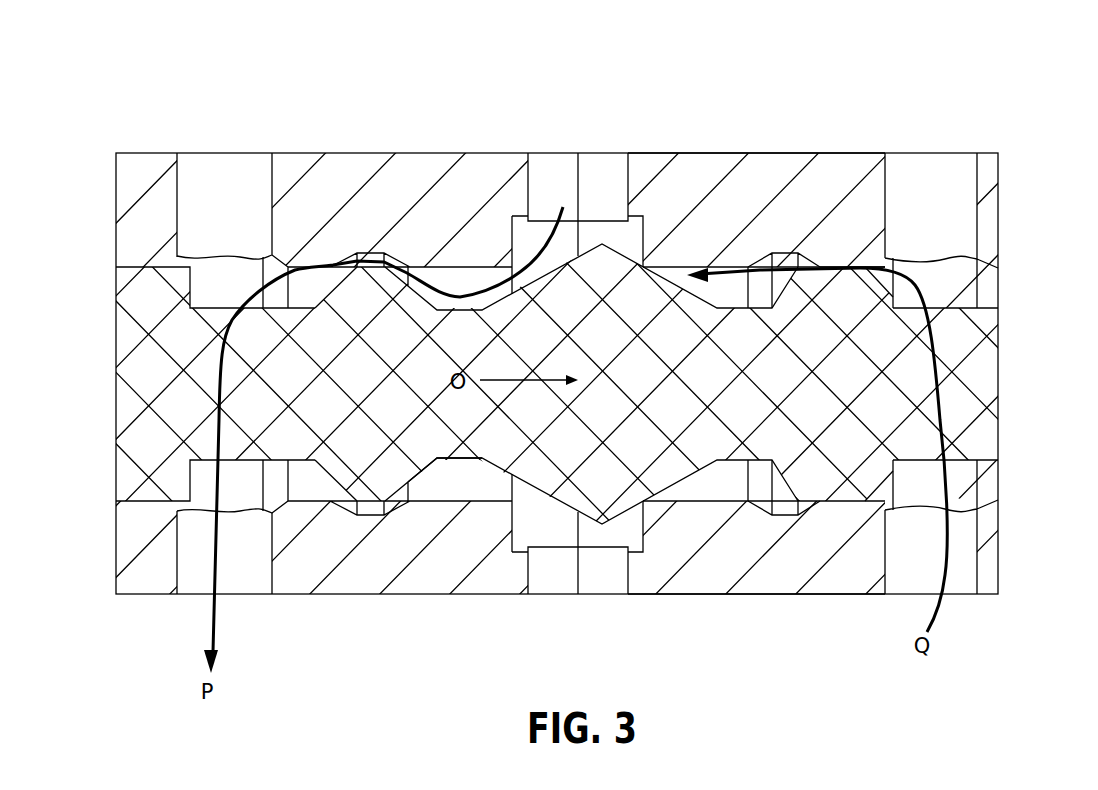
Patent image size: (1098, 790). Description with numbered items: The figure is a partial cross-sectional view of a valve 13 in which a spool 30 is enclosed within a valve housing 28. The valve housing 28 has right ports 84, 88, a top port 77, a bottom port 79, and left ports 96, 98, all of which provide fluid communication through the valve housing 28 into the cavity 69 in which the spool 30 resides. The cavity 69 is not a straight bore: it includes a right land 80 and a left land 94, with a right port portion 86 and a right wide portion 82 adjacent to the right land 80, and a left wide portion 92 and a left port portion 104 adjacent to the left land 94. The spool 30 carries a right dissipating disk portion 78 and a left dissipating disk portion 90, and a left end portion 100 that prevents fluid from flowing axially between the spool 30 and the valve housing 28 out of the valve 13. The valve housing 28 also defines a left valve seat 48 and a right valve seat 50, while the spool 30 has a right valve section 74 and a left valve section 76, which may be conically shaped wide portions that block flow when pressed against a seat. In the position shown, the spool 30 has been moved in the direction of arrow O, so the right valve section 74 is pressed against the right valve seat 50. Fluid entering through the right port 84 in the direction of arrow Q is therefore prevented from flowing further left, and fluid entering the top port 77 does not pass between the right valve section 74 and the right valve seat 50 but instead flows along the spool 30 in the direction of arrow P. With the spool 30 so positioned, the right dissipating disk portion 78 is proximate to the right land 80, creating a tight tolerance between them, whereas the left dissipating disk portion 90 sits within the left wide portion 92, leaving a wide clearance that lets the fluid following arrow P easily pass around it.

The valve 13 is at (441, 96).
The valve housing 28 is at (705, 170).
The spool 30 is at (728, 389).
The left valve seat 48 is at (505, 263).
The right valve seat 50 is at (787, 250).
The cavity 69 is at (445, 488).
The right valve section 74 is at (617, 273).
The left valve section 76 is at (590, 257).
The top port 77 is at (565, 165).
The right dissipating disk portion 78 is at (839, 290).
The bottom port 79 is at (553, 596).
The right land 80 is at (868, 268).
The right wide portion 82 is at (825, 267).
The right port 84 is at (968, 595).
The right port portion 86 is at (985, 292).
The right port 88 is at (945, 193).
The left dissipating disk portion 90 is at (333, 269).
The left wide portion 92 is at (362, 252).
The left land 94 is at (300, 265).
The left port 96 is at (190, 585).
The left port 98 is at (195, 192).
The left end portion 100 is at (150, 350).
The left port portion 104 is at (180, 525).